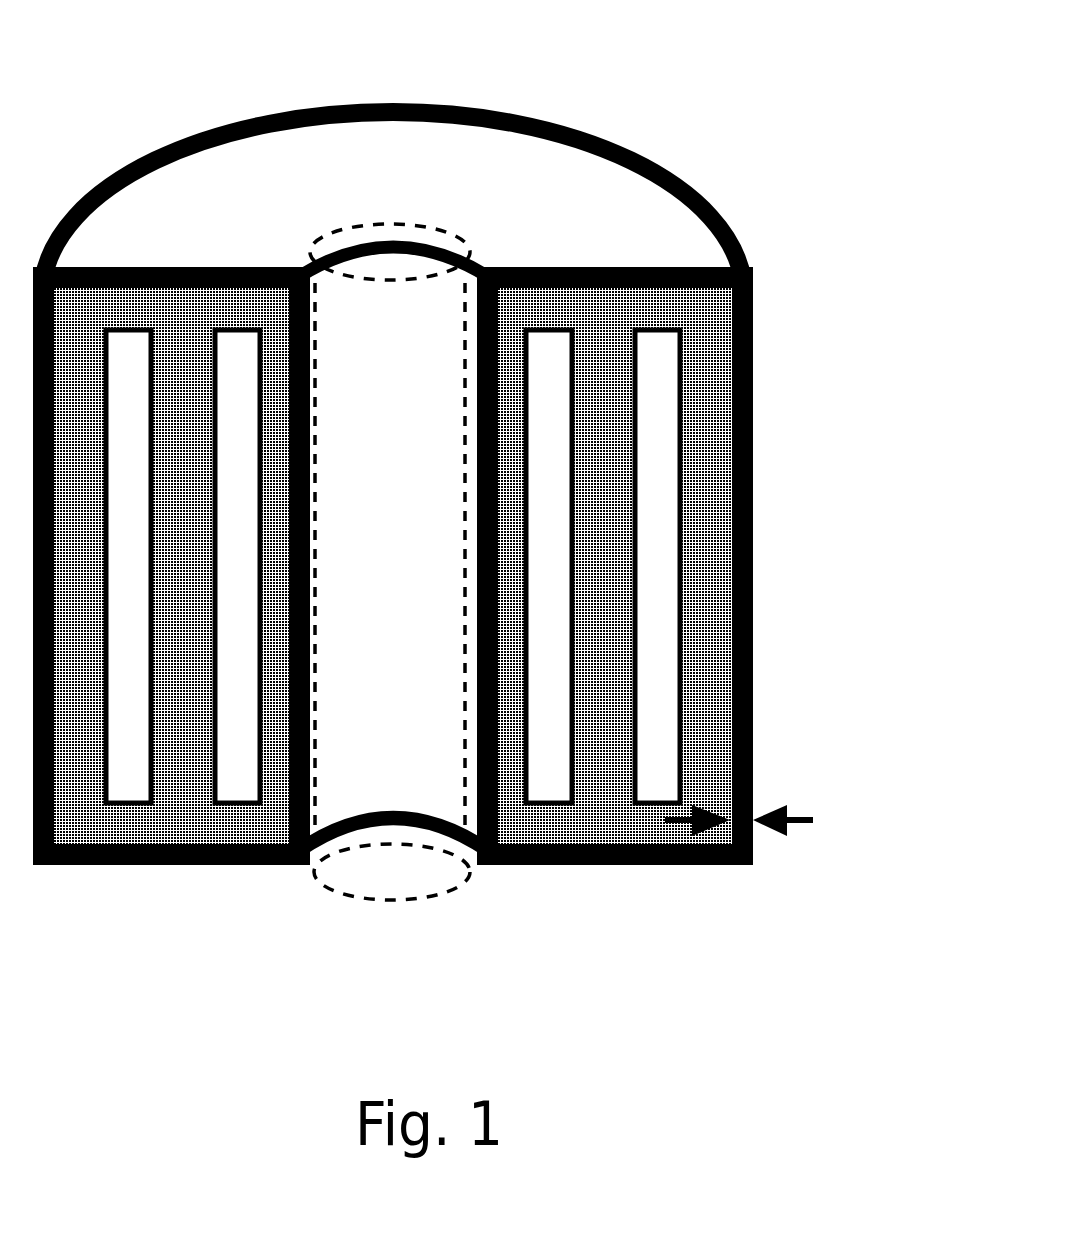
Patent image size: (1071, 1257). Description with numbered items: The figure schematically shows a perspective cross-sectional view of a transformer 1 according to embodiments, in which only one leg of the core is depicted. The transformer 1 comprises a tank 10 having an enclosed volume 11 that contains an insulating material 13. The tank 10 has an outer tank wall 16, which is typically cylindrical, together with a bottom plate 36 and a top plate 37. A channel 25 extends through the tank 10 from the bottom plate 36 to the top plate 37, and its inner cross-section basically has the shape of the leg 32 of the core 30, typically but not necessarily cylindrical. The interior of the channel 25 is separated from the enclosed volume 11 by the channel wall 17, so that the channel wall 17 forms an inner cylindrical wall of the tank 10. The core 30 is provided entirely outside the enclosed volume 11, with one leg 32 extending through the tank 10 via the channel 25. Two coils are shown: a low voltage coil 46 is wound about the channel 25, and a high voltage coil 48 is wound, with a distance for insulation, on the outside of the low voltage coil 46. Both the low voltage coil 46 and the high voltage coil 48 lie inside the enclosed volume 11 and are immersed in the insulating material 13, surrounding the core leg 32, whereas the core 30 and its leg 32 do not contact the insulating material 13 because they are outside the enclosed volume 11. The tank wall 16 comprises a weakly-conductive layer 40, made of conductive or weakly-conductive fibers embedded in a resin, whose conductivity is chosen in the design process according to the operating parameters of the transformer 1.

The transformer 1 is at (135, 61).
The tank 10 is at (715, 594).
The enclosed volume 11 is at (684, 566).
The insulating material 13 is at (700, 318).
The tank wall 16 is at (715, 566).
The channel wall 17 is at (478, 257).
The channel 25 is at (330, 803).
The core 30 is at (360, 898).
The leg 32 is at (388, 513).
The bottom plate 36 is at (120, 867).
The top plate 37 is at (627, 207).
The weakly-conductive layer 40 is at (715, 566).
The low voltage coil 46 is at (560, 790).
The high voltage coil 48 is at (660, 792).